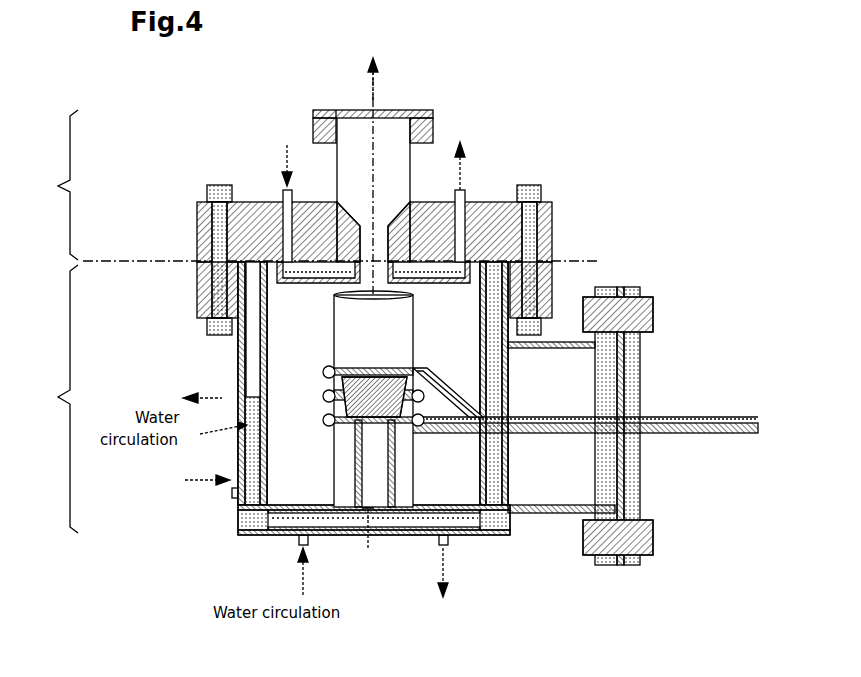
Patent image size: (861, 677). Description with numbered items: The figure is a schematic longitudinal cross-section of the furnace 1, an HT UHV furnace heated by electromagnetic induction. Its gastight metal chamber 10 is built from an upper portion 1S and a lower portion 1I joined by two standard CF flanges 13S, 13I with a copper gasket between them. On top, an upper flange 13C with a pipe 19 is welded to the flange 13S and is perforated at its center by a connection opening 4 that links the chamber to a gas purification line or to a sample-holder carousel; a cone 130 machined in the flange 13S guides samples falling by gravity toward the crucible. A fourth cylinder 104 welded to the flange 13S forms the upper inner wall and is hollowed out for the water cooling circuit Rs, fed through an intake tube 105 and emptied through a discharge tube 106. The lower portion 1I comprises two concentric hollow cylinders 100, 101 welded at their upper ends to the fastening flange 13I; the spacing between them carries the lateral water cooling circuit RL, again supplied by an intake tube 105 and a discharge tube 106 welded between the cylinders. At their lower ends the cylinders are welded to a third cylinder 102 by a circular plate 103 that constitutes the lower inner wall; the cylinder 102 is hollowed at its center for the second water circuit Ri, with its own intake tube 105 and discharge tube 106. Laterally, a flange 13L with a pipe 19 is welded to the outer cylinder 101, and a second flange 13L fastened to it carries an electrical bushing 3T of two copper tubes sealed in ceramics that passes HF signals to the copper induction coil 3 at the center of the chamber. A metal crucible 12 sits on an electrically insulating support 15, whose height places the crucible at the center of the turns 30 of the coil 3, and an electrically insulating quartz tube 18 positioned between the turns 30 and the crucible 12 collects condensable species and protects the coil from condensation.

The furnace 1 is at (545, 126).
The upper portion of the chamber 1S is at (51, 185).
The lower portion of the chamber 1I is at (54, 399).
The induction coil 3 is at (330, 360).
The electrical bushing 3T is at (725, 415).
The connection opening 4 is at (372, 69).
The metal chamber 10 is at (447, 356).
The metal crucible 12 is at (388, 375).
The electrically insulating support 15 is at (366, 546).
The electrically insulating tube 18 is at (330, 448).
The pipe 19 is at (336, 108).
The turns of the induction coil 30 is at (322, 373).
The hollow cylinder 100 is at (237, 456).
The outer lateral cylinder 101 is at (512, 492).
The third cylinder 102 is at (242, 538).
The circular plate 103 is at (454, 510).
The fourth cylinder 104 is at (515, 216).
The intake tube 105 is at (284, 222).
The discharge tube 106 is at (460, 204).
The cone 130 is at (356, 212).
The upper flange 13C is at (440, 120).
The upper CF flange 13S is at (196, 219).
The lower CF flange 13I is at (196, 284).
The lateral flange 13L is at (610, 287).
The upper water cooling circuit Rs is at (327, 270).
The lateral water cooling circuit RL is at (512, 398).
The lower water cooling circuit Ri is at (396, 528).